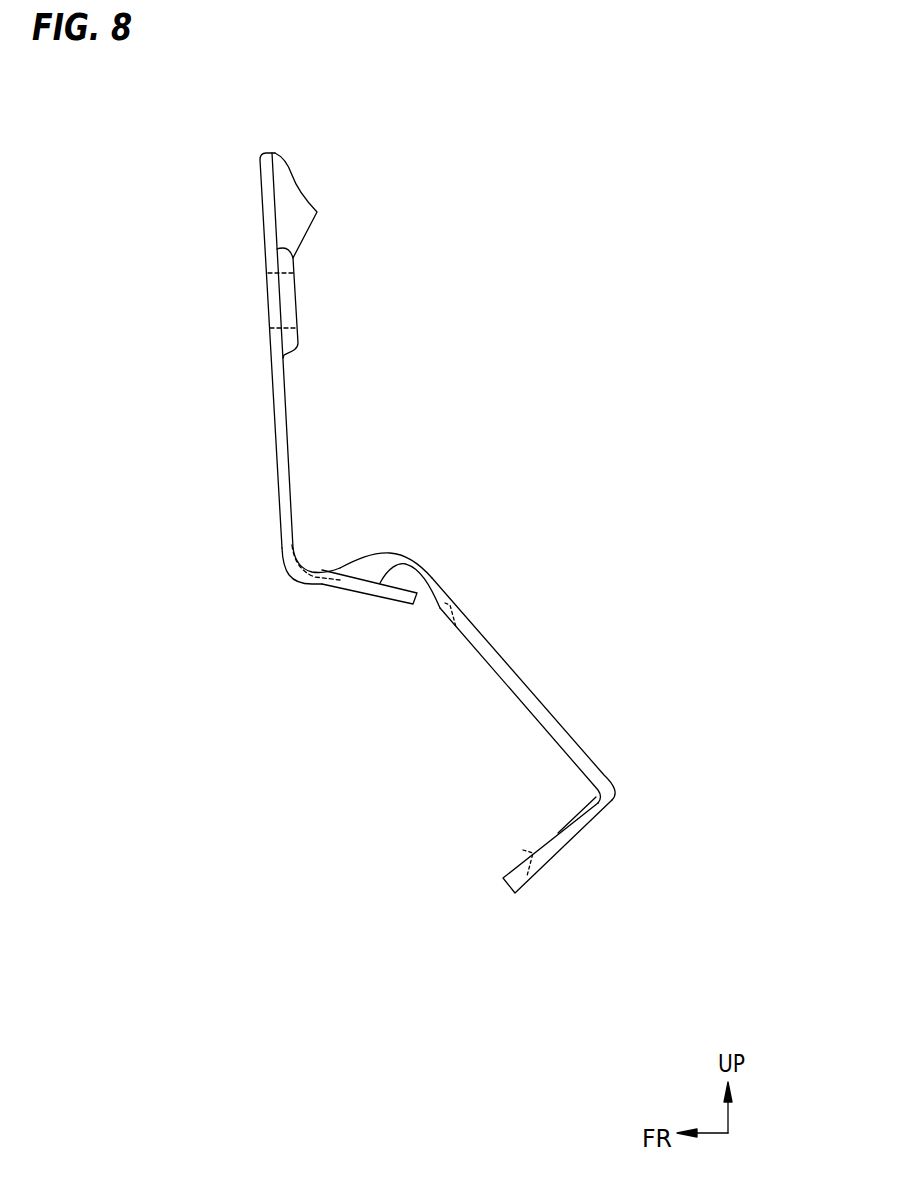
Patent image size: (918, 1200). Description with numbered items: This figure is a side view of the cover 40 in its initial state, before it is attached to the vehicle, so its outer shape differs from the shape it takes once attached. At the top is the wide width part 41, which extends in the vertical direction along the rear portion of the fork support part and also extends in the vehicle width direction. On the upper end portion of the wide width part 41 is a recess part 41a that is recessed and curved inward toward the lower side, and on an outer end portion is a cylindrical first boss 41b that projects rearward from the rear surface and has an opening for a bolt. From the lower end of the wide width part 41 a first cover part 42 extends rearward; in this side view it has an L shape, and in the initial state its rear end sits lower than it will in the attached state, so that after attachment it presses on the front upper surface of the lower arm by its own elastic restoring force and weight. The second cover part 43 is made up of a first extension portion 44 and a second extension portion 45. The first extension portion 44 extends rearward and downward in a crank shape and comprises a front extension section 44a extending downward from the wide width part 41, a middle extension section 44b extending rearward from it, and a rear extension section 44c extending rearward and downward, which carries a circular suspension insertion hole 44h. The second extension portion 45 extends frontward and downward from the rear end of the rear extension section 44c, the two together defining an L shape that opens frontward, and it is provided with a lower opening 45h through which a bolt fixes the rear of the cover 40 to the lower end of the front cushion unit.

The cover 40 is at (630, 108).
The wide width part 41 is at (285, 397).
The recess part 41a is at (297, 187).
The first boss 41b is at (288, 303).
The first cover part 42 is at (380, 583).
The second cover part 43 is at (743, 747).
The first extension portion 44 is at (590, 760).
The front extension section 44a is at (282, 548).
The middle extension section 44b is at (345, 567).
The rear extension section 44c is at (443, 588).
The suspension insertion hole 44h is at (457, 628).
The second extension portion 45 is at (565, 858).
The lower opening 45h is at (530, 855).